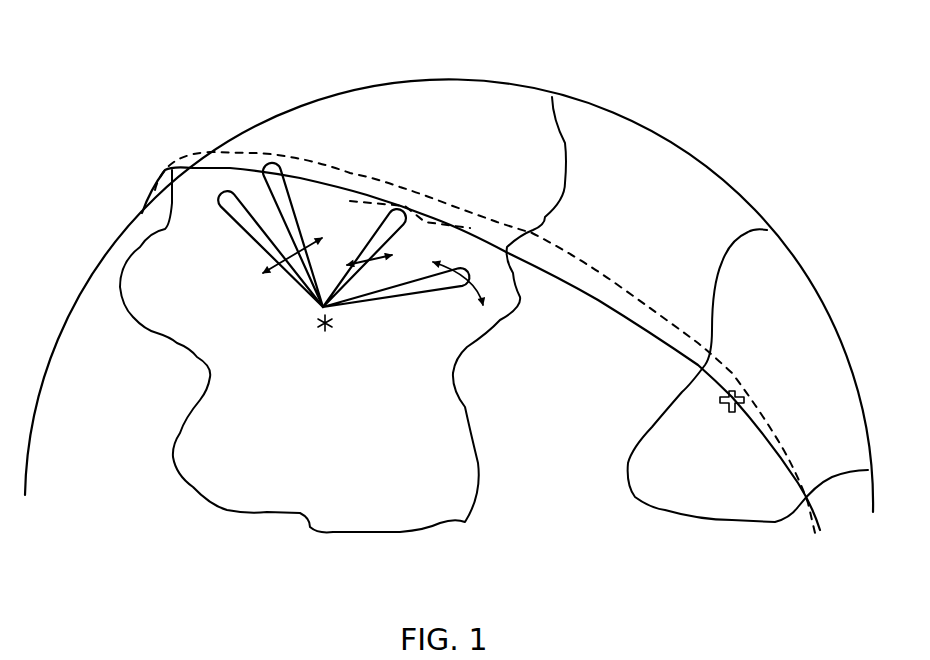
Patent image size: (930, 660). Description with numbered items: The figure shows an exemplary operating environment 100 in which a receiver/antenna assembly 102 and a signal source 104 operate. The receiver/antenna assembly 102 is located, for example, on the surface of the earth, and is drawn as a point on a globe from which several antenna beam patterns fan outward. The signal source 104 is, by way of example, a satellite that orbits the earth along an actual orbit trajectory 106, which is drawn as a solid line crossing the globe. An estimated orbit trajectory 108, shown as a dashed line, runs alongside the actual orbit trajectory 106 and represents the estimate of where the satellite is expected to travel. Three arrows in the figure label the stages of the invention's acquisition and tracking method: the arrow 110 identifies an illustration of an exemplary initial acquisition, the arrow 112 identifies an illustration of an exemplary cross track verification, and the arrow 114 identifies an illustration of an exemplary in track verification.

The operating environment 100 is at (228, 62).
The receiver/antenna assembly 102 is at (315, 347).
The signal source 104 is at (700, 420).
The actual orbit trajectory 106 is at (313, 180).
The estimated orbit trajectory 108 is at (288, 157).
The arrow 110 is at (240, 283).
The arrow 112 is at (372, 267).
The arrow 114 is at (432, 295).